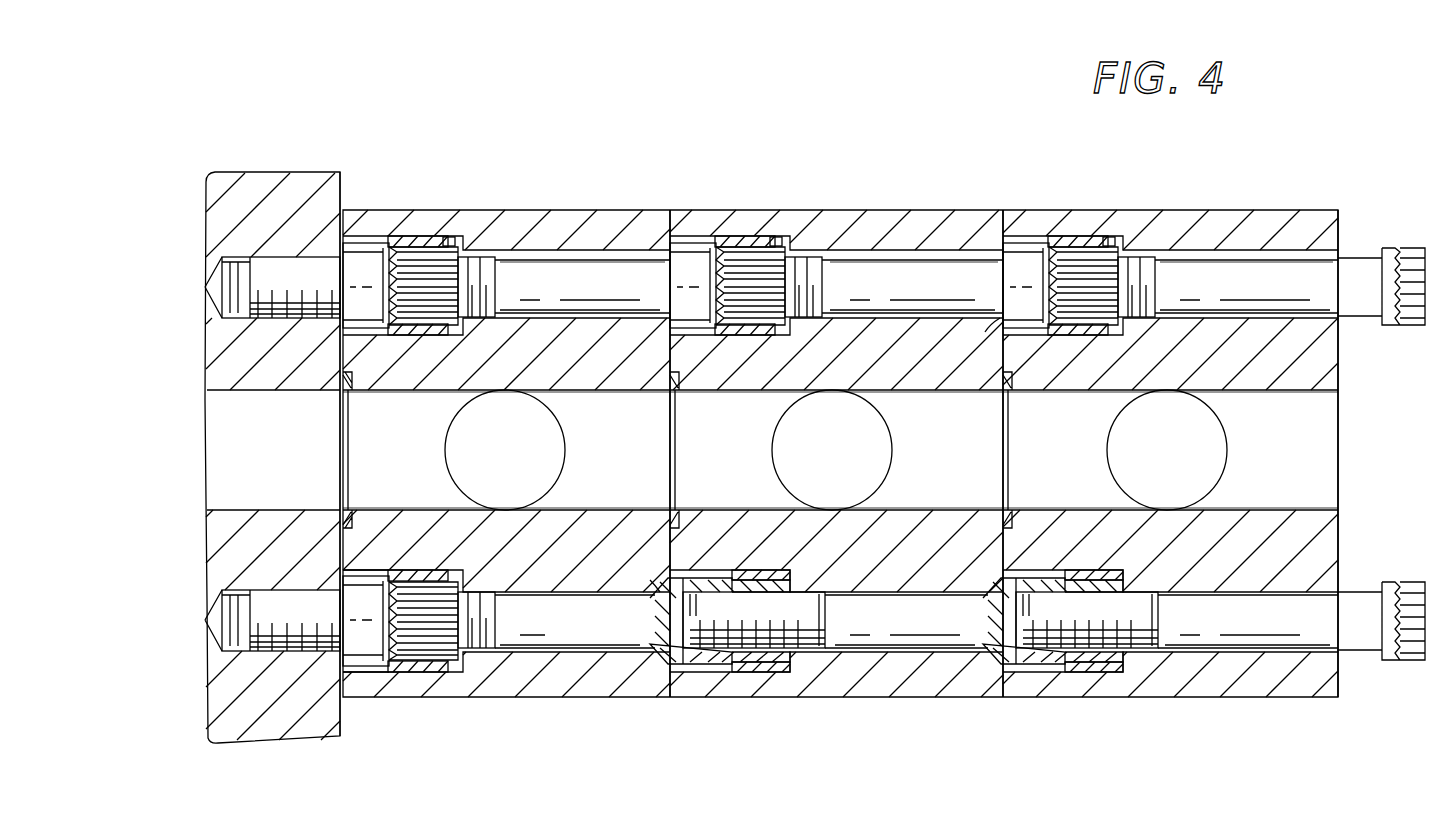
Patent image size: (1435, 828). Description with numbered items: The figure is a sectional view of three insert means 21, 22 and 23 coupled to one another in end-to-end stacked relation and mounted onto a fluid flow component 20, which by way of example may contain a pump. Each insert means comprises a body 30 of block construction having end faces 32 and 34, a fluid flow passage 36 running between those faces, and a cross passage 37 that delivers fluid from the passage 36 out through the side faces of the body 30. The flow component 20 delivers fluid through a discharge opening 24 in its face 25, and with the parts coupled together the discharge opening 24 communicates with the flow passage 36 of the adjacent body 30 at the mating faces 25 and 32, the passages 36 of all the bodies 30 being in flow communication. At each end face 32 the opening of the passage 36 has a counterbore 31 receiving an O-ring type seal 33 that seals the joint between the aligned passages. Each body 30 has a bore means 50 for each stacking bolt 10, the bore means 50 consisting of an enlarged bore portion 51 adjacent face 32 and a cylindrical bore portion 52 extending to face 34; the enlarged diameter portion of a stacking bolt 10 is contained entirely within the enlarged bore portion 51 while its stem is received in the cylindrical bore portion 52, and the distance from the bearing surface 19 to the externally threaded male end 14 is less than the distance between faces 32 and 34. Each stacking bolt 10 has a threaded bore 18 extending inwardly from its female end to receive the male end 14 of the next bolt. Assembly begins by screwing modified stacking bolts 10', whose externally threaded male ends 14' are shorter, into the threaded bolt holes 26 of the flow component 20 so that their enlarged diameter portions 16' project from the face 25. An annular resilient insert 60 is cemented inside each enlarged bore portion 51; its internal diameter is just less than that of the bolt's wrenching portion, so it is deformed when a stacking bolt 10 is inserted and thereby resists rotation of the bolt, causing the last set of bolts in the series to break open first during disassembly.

The stacking bolt 10 is at (957, 454).
The modified size stacking bolt 10' is at (696, 462).
The externally threaded male end 14 is at (920, 592).
The externally threaded male end 14' is at (271, 428).
The enlarged diameter portion 16' is at (392, 575).
The threaded bore 18 is at (692, 590).
The bearing surface 19 is at (995, 330).
The fluid flow component 20 is at (268, 185).
The insert means 21 is at (508, 198).
The insert means 22 is at (858, 198).
The insert means 23 is at (1167, 198).
The discharge opening 24 is at (212, 393).
The face 25 is at (345, 210).
The threaded bolt holes 26 is at (275, 262).
The body 30 is at (560, 210).
The counterbore 31 is at (346, 512).
The end face 32 is at (668, 210).
The O-ring type seal 33 is at (350, 385).
The end face 34 is at (1005, 210).
The fluid flow passage 36 is at (605, 395).
The cross passage 37 is at (555, 418).
The bore means 50 is at (623, 250).
The enlarged bore portion 51 is at (456, 237).
The cylindrical bore portion 52 is at (575, 258).
The annular resilient insert 60 is at (432, 240).